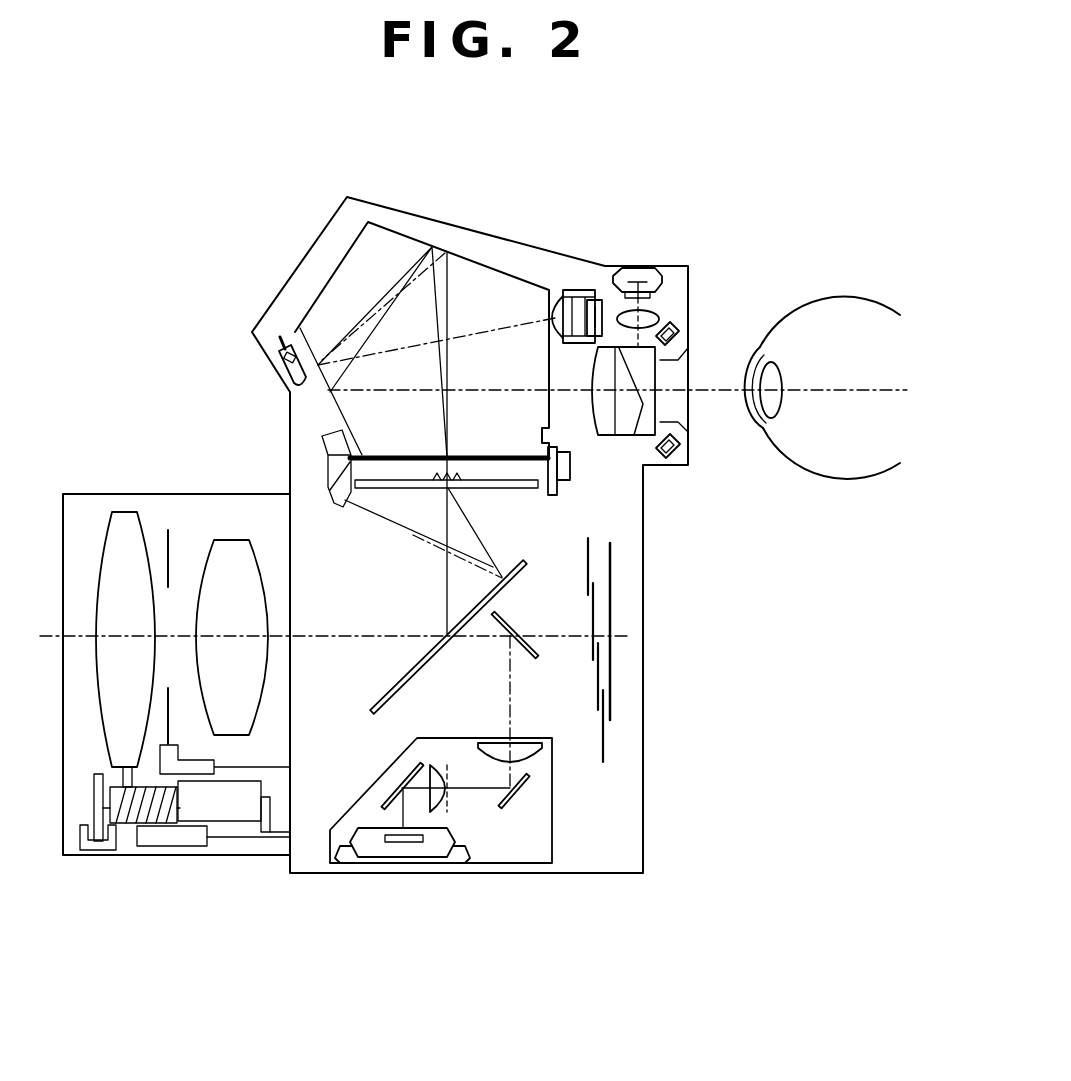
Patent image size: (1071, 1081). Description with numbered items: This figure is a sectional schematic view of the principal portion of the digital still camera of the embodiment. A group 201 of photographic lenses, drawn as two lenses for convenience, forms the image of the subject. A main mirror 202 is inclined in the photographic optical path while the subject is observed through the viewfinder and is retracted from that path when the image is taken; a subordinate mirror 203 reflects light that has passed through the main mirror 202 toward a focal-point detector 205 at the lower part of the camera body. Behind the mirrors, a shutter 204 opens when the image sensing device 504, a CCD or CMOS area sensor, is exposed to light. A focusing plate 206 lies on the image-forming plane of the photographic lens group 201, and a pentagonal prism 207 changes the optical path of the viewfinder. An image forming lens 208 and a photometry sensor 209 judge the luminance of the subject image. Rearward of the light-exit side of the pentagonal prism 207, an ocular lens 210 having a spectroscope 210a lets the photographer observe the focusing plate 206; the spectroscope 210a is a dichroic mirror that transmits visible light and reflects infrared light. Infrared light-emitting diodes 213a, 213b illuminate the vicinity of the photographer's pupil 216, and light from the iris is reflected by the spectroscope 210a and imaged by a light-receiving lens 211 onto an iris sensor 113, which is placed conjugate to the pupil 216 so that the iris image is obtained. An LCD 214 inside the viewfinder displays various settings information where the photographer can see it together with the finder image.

The group of photographic lenses 201 is at (259, 478).
The main mirror 202 is at (437, 653).
The subordinate mirror 203 is at (530, 657).
The shutter 204 is at (590, 568).
The image sensing device 504 is at (610, 667).
The focal-point detector 205 is at (553, 826).
The focusing plate 206 is at (510, 489).
The pentagonal prism 207 is at (340, 280).
The image forming lens 208 is at (572, 296).
The photometry sensor 209 is at (600, 302).
The iris sensor 113 is at (658, 272).
The light-receiving lens 211 is at (656, 324).
The infrared light-emitting diode 213a is at (683, 325).
The infrared light-emitting diode 213b is at (680, 448).
The ocular lens 210 is at (607, 403).
The spectroscope 210a is at (636, 432).
The LCD inside the viewfinder 214 is at (570, 475).
The pupil of the photographer's eye 216 is at (763, 430).